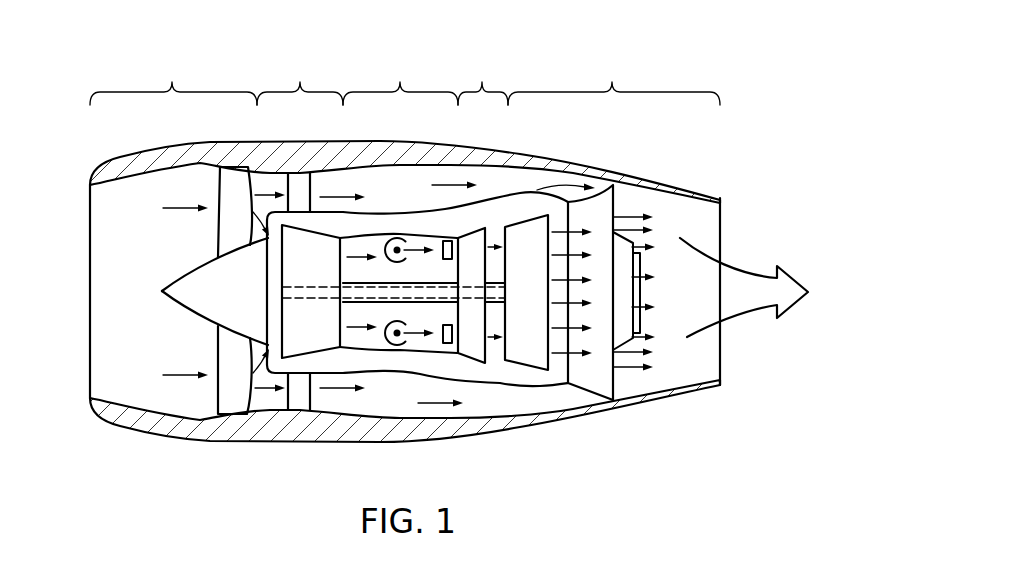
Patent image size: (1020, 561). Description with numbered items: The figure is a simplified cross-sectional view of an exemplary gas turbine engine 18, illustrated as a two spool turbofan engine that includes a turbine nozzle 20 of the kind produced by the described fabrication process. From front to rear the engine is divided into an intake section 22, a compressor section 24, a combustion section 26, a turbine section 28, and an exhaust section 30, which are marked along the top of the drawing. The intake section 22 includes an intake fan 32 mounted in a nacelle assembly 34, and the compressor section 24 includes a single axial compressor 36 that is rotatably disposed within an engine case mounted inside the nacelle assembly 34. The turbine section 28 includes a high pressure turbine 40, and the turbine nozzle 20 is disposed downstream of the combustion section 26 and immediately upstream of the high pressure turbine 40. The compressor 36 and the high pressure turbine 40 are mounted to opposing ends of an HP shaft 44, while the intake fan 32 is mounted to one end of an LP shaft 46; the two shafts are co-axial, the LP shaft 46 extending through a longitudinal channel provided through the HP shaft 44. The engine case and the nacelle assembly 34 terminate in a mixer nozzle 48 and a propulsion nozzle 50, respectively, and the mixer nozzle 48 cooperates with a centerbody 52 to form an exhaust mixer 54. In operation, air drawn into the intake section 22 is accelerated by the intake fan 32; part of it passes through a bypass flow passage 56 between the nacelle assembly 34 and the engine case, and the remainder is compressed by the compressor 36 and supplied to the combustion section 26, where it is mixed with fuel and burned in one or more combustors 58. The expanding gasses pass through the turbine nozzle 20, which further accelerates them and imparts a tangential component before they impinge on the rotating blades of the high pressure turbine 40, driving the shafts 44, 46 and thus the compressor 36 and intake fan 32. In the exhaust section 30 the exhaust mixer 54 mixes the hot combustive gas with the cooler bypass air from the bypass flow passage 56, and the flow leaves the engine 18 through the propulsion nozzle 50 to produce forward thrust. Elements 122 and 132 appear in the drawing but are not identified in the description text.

The gas turbine engine 18 is at (510, 248).
The turbine nozzle 20 is at (447, 241).
The intake section 22 is at (173, 76).
The compressor section 24 is at (300, 76).
The combustion section 26 is at (400, 76).
The turbine section 28 is at (483, 76).
The exhaust section 30 is at (614, 76).
The intake fan 32 is at (203, 303).
The nacelle assembly 34 is at (227, 443).
The axial compressor 36 is at (328, 272).
The high pressure turbine 40 is at (473, 236).
The HP shaft 44 is at (385, 298).
The LP shaft 46 is at (302, 299).
The mixer nozzle 48 is at (594, 383).
The propulsion nozzle 50 is at (720, 224).
The centerbody 52 is at (623, 260).
The exhaust mixer 54 is at (718, 298).
The bypass flow passage 56 is at (404, 176).
The combustor 58 is at (398, 242).
The turbine casing 122 is at (405, 369).
The power turbine 132 is at (507, 304).